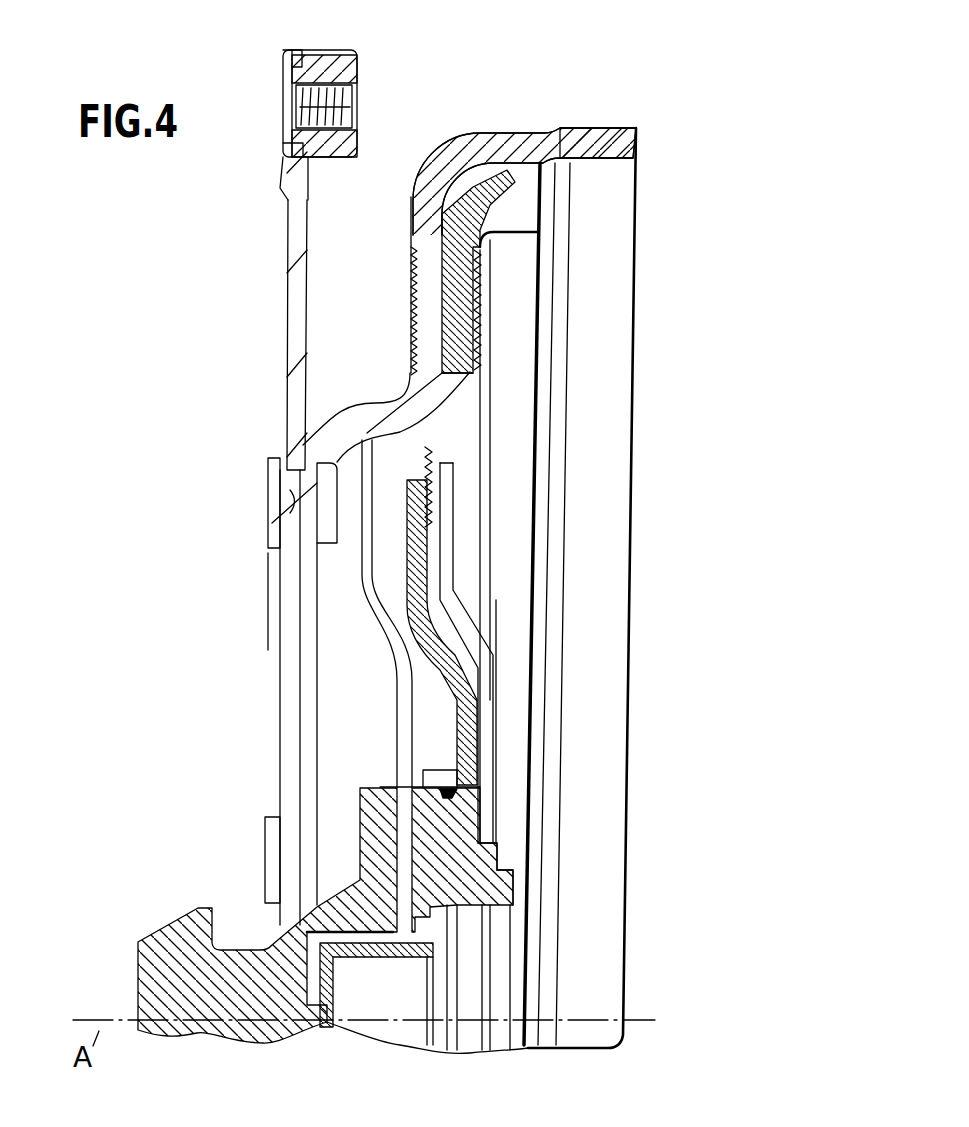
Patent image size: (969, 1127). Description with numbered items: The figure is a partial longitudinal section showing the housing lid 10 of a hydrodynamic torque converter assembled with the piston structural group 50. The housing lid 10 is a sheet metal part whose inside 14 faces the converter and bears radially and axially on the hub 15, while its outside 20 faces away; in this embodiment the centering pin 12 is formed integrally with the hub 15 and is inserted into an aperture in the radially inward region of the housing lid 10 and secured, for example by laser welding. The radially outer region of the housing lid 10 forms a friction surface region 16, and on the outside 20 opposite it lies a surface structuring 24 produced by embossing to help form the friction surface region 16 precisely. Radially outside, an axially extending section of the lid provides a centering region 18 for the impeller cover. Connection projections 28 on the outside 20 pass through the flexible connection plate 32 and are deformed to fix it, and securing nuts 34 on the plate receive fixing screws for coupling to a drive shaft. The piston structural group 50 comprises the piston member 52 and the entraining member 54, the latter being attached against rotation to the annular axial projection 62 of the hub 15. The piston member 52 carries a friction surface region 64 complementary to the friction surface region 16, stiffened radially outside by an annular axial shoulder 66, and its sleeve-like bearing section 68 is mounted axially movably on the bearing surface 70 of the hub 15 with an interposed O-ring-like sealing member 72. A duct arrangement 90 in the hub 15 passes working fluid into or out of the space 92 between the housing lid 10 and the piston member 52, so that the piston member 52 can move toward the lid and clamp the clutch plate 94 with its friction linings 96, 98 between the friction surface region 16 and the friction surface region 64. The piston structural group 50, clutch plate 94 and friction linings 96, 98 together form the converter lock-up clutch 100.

The housing lid 10 is at (500, 133).
The centering pin 12 is at (196, 1007).
The inside 14 is at (493, 559).
The hub 15 is at (468, 895).
The friction surface region 16 is at (442, 270).
The centering region 18 is at (603, 140).
The outside 20 is at (403, 253).
The surface structuring 24 is at (442, 312).
The connection projections 28 is at (278, 478).
The flexible connection plate 32 is at (290, 370).
The securing nuts 34 is at (331, 62).
The piston structural group 50 is at (493, 370).
The piston member 52 is at (470, 415).
The entraining member 54 is at (480, 767).
The annular axial projection 62 is at (497, 825).
The friction surface region 64 is at (480, 320).
The annular axial shoulder 66 is at (540, 215).
The bearing section 68 is at (410, 747).
The bearing surface 70 is at (420, 808).
The sealing member 72 is at (487, 823).
The duct arrangement 90 is at (403, 930).
The space 92 is at (347, 556).
The clutch plate 94 is at (468, 200).
The friction lining 96 is at (490, 272).
The friction lining 98 is at (442, 293).
The converter lock-up clutch 100 is at (528, 197).